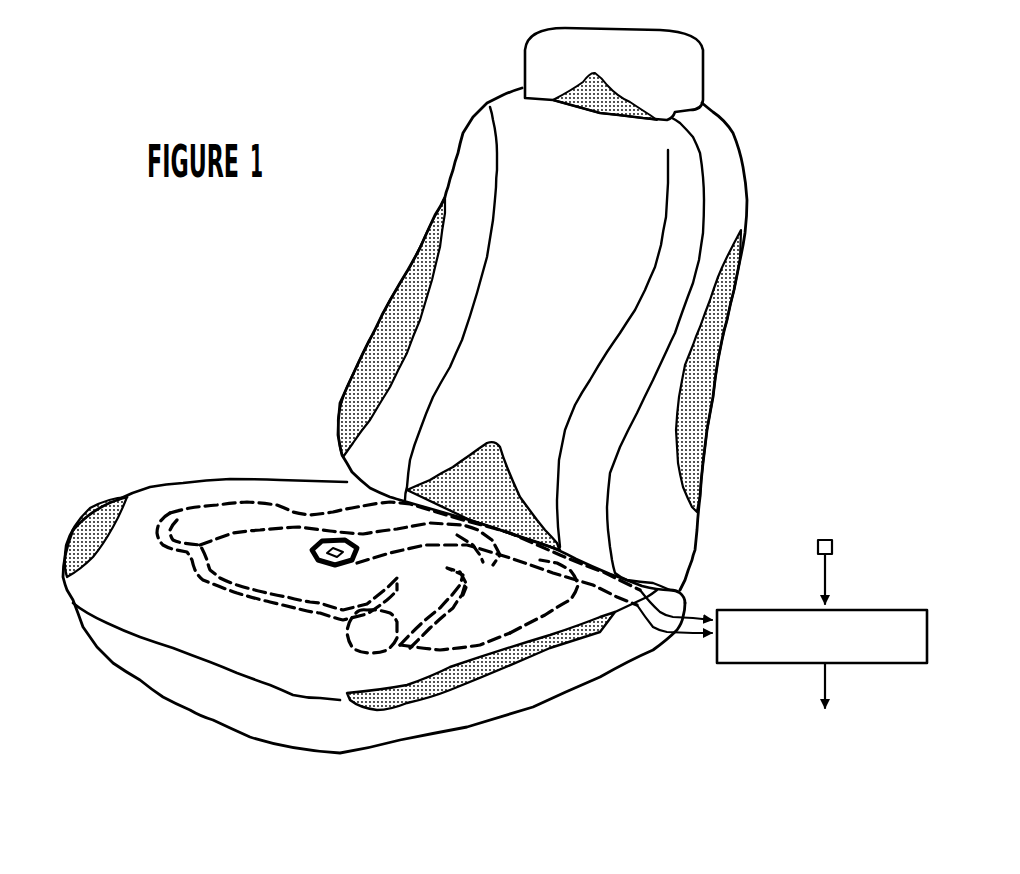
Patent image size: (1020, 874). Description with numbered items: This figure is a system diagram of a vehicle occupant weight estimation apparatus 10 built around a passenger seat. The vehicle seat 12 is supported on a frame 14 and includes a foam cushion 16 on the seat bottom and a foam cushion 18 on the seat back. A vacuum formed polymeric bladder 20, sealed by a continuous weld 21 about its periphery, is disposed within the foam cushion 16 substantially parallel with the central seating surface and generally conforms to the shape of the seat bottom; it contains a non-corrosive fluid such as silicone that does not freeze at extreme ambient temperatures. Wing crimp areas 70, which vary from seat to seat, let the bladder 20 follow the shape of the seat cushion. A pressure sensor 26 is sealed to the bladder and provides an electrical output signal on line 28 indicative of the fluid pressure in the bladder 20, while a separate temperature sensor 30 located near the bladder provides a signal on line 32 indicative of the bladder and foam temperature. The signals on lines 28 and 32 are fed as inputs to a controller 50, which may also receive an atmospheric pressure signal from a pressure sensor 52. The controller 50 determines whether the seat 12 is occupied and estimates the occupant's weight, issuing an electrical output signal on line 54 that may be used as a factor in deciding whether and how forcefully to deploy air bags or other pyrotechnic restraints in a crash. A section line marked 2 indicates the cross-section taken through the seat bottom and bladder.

The vehicle occupant weight estimation apparatus 10 is at (778, 172).
The vehicle seat 12 is at (288, 418).
The frame 14 is at (343, 733).
The foam cushion 16 is at (130, 575).
The foam cushion 18 is at (715, 262).
The bladder 20 is at (197, 573).
The continuous weld 21 is at (290, 566).
The pressure sensor 26 is at (240, 583).
The line 28 is at (540, 562).
The temperature sensor 30 is at (343, 562).
The line 32 is at (557, 600).
The wing crimp areas 70 is at (357, 575).
The controller 50 is at (855, 665).
The pressure sensor 52 is at (818, 545).
The line 54 is at (822, 685).
The section line 2- 2 is at (167, 507).